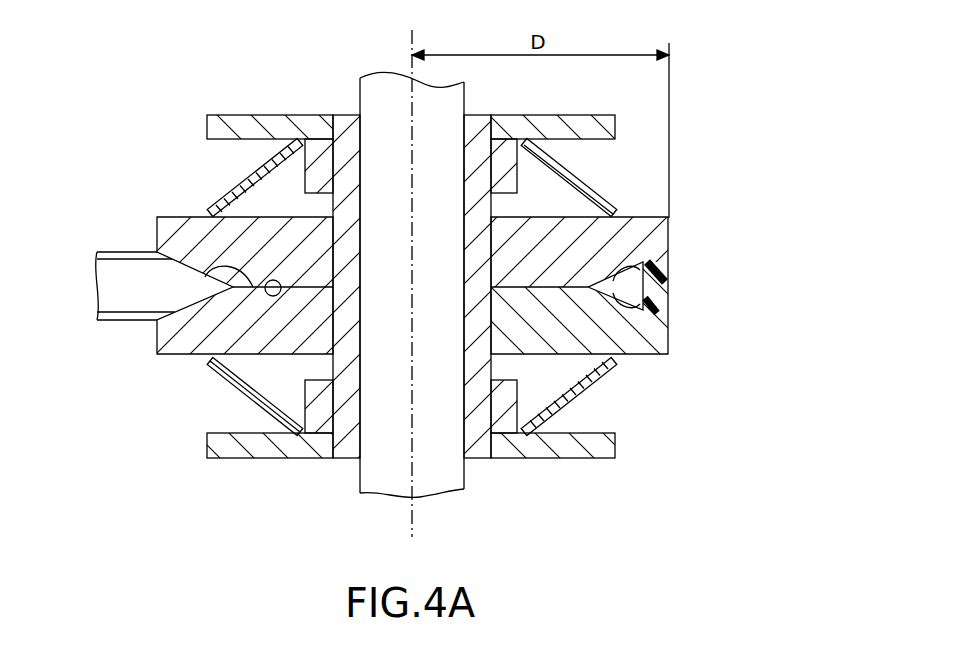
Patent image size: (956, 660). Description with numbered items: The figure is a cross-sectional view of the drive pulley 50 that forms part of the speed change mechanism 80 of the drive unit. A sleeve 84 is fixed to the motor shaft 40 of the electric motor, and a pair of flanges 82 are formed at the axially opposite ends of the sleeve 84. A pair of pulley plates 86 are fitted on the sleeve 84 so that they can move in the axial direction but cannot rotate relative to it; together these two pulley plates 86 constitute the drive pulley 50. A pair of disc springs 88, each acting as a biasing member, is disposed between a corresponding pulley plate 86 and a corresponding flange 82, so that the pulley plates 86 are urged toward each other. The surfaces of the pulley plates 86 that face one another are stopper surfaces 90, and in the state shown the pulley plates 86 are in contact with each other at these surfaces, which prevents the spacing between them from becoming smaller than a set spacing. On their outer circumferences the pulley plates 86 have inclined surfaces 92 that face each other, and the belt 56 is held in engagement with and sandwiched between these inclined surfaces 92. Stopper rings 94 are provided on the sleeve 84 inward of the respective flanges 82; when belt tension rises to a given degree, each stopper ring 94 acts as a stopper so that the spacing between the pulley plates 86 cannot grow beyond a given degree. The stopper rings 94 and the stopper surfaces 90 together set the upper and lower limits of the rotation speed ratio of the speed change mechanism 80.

The motor shaft 40 is at (380, 475).
The drive pulley 50 is at (702, 202).
The belt 56 is at (658, 287).
The speed change mechanism 80 is at (725, 53).
The flanges 82 is at (227, 120).
The sleeve 84 is at (342, 363).
The pulley plates 86 is at (187, 228).
The disc springs 88 is at (233, 192).
The stopper surfaces 90 is at (280, 283).
The inclined surfaces 92 is at (641, 262).
The stopper rings 94 is at (313, 177).